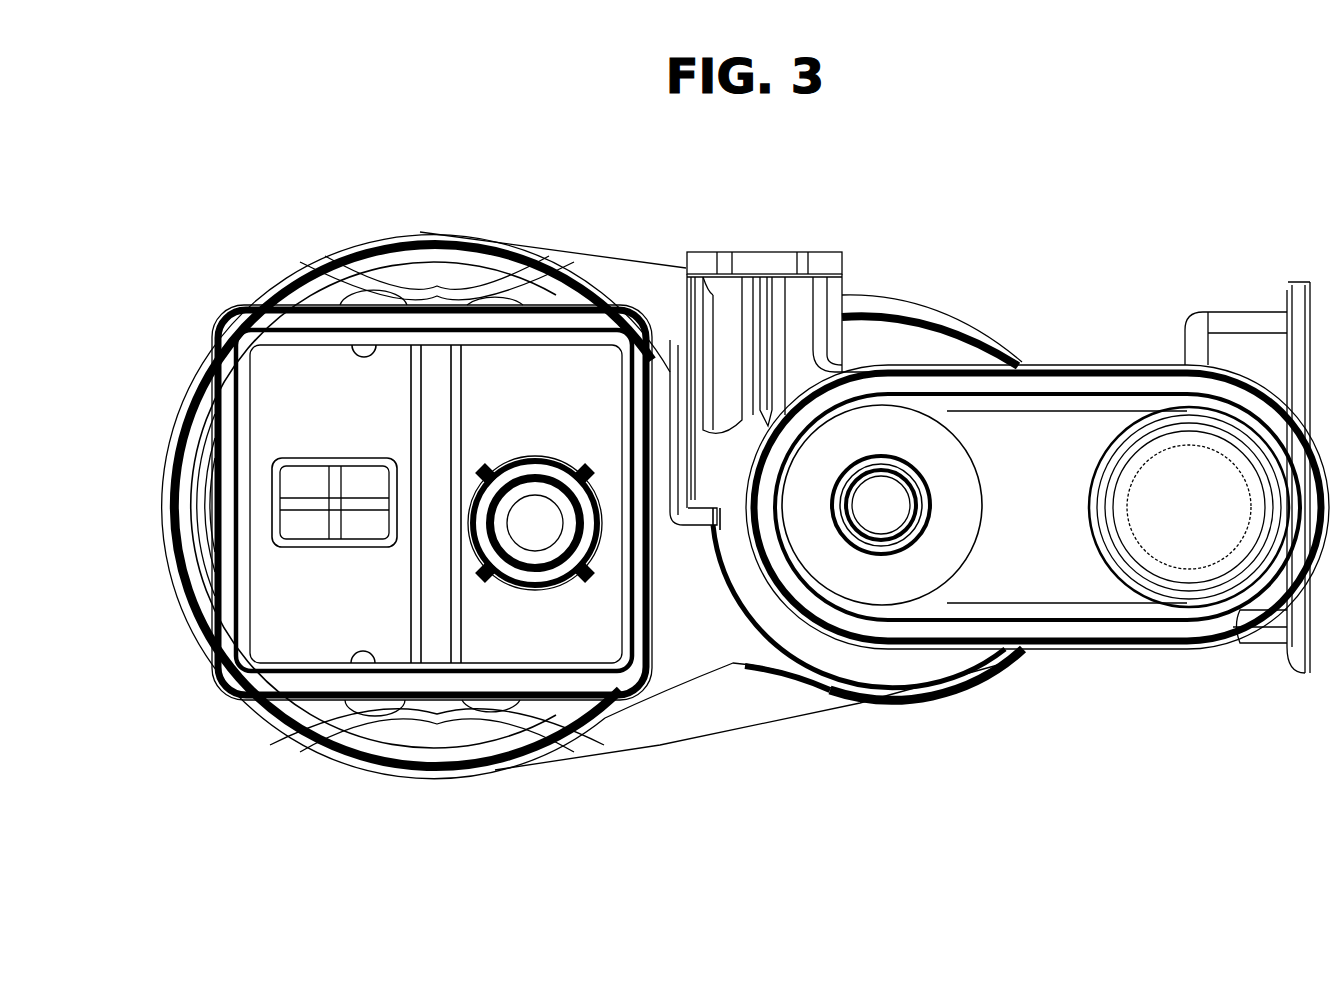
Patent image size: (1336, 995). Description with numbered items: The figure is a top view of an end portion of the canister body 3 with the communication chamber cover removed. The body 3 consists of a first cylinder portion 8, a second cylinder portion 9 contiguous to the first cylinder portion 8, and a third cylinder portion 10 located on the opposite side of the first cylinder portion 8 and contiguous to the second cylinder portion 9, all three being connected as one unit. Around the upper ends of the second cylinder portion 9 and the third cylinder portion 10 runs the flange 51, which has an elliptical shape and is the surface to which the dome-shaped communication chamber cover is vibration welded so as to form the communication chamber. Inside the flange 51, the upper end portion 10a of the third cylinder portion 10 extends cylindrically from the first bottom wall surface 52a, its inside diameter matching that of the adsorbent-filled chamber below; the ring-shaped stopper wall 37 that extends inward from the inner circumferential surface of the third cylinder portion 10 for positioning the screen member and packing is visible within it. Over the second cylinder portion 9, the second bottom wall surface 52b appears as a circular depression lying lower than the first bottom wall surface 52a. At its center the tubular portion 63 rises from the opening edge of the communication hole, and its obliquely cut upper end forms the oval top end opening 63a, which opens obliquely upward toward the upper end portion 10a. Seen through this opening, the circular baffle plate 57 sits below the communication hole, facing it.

The body 3 is at (733, 720).
The first cylinder portion 8 is at (540, 742).
The second cylinder portion 9 is at (848, 700).
The third cylinder portion 10 is at (1125, 585).
The upper end portion of the third cylinder portion 10a is at (1193, 403).
The stopper wall 37 is at (1207, 580).
The flange 51 is at (1104, 385).
The first bottom wall surface 52a is at (1075, 605).
The second bottom wall surface 52b is at (935, 437).
The baffle plate 57 is at (873, 527).
The tubular portion 63 is at (927, 522).
The top end opening 63a is at (890, 492).